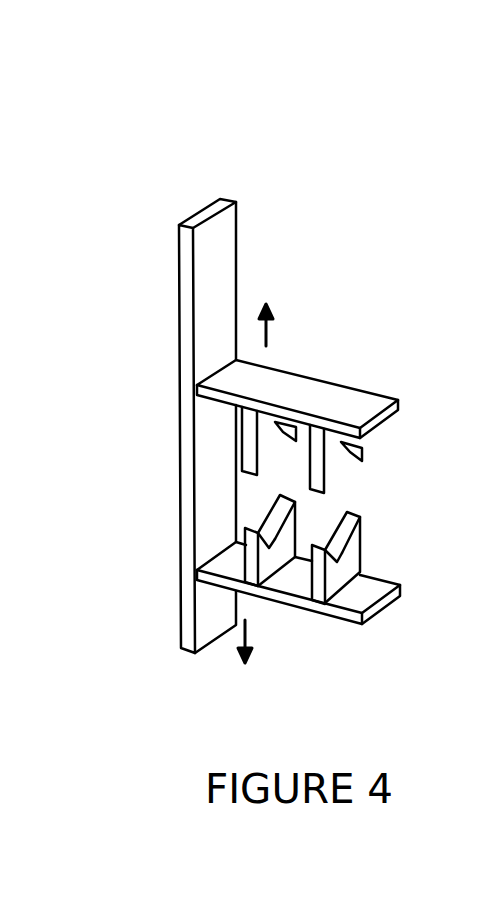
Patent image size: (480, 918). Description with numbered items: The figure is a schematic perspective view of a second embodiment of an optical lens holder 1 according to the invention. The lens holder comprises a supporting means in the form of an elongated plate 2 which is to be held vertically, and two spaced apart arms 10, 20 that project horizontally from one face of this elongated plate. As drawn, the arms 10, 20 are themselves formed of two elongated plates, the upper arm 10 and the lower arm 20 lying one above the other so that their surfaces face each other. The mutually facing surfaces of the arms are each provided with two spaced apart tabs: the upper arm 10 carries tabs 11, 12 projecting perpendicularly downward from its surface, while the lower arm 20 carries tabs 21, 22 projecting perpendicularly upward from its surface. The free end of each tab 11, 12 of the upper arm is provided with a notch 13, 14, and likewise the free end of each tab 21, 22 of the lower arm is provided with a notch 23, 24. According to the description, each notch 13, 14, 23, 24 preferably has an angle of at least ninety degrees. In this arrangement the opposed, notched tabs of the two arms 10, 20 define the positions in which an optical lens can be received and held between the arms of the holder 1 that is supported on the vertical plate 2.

The fastening assembly 1 is at (300, 334).
The support plate 2 is at (228, 242).
The arm 10 is at (352, 367).
The tab 11 is at (332, 467).
The tab 12 is at (252, 433).
The notch 13 is at (342, 444).
The notch 14 is at (279, 424).
The arm 20 is at (352, 630).
The tab 21 is at (332, 578).
The tab 22 is at (243, 540).
The notch 23 is at (361, 522).
The notch 24 is at (263, 524).